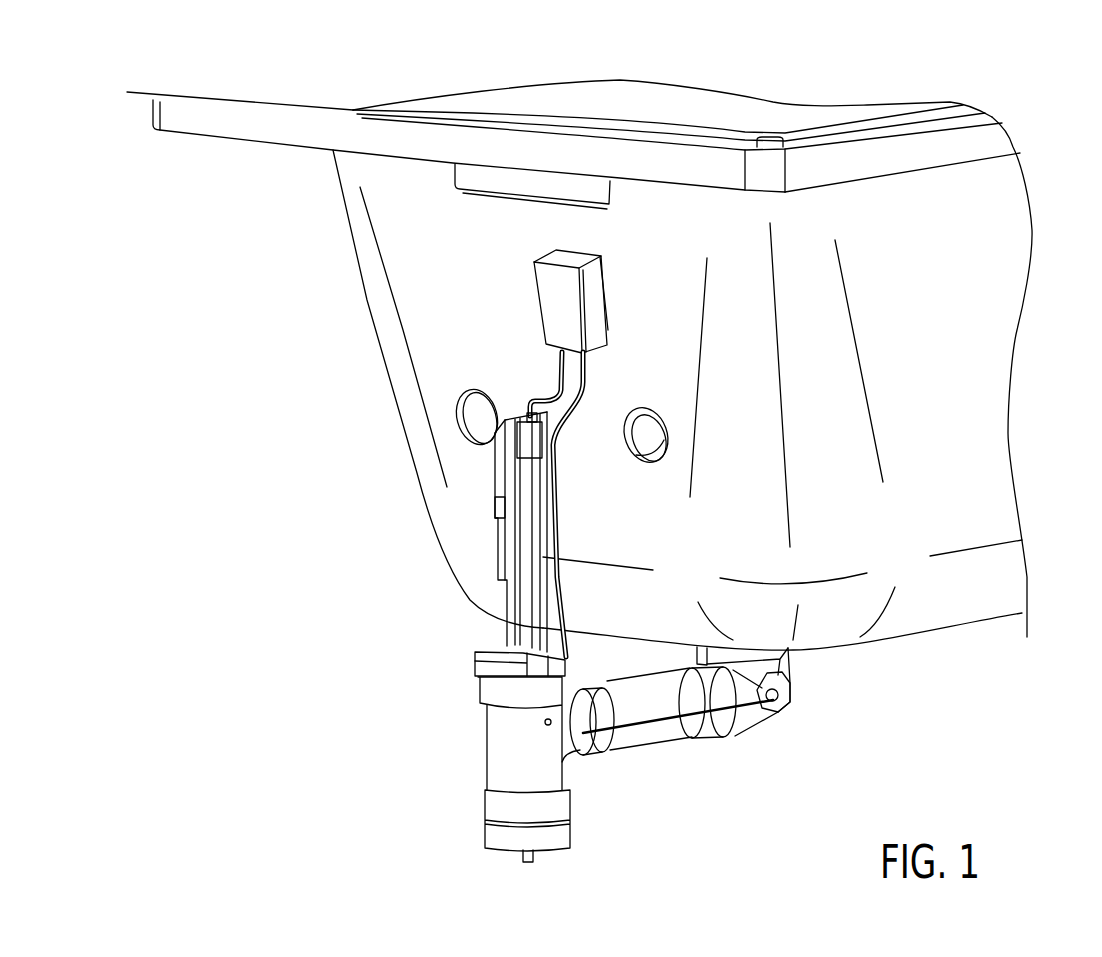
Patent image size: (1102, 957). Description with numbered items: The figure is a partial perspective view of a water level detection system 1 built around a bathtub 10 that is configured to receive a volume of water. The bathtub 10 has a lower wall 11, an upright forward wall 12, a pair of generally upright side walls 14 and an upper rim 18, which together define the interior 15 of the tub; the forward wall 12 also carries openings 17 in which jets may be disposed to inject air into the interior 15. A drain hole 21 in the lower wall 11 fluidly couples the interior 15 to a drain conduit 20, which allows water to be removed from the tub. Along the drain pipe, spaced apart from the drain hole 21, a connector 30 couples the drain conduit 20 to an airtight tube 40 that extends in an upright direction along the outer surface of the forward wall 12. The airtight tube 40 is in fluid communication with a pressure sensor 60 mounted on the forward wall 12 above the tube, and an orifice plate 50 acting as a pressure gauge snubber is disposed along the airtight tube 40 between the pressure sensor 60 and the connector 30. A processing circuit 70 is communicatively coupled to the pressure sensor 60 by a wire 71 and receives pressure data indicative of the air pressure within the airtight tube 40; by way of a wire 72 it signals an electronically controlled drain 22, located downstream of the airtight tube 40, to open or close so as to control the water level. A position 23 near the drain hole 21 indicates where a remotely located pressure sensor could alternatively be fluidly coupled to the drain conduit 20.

The water level detection system 1 is at (1020, 84).
The bathtub 10 is at (930, 221).
The lower wall 11 is at (937, 631).
The forward wall 12 is at (403, 227).
The side walls 14 is at (930, 372).
The interior 15 is at (685, 110).
The openings for jets 17 is at (456, 402).
The upper rim 18 is at (836, 125).
The drain conduit 20 is at (770, 672).
The drain hole 21 is at (783, 655).
The electronically controlled drain 22 is at (531, 862).
The position 23 is at (773, 707).
The connector 30 is at (507, 688).
The airtight tube 40 is at (527, 540).
The orifice plate 50 is at (537, 657).
The pressure sensor 60 is at (533, 440).
The processing circuit 70 is at (557, 307).
The wire 71 is at (562, 380).
The wire 72 is at (588, 378).